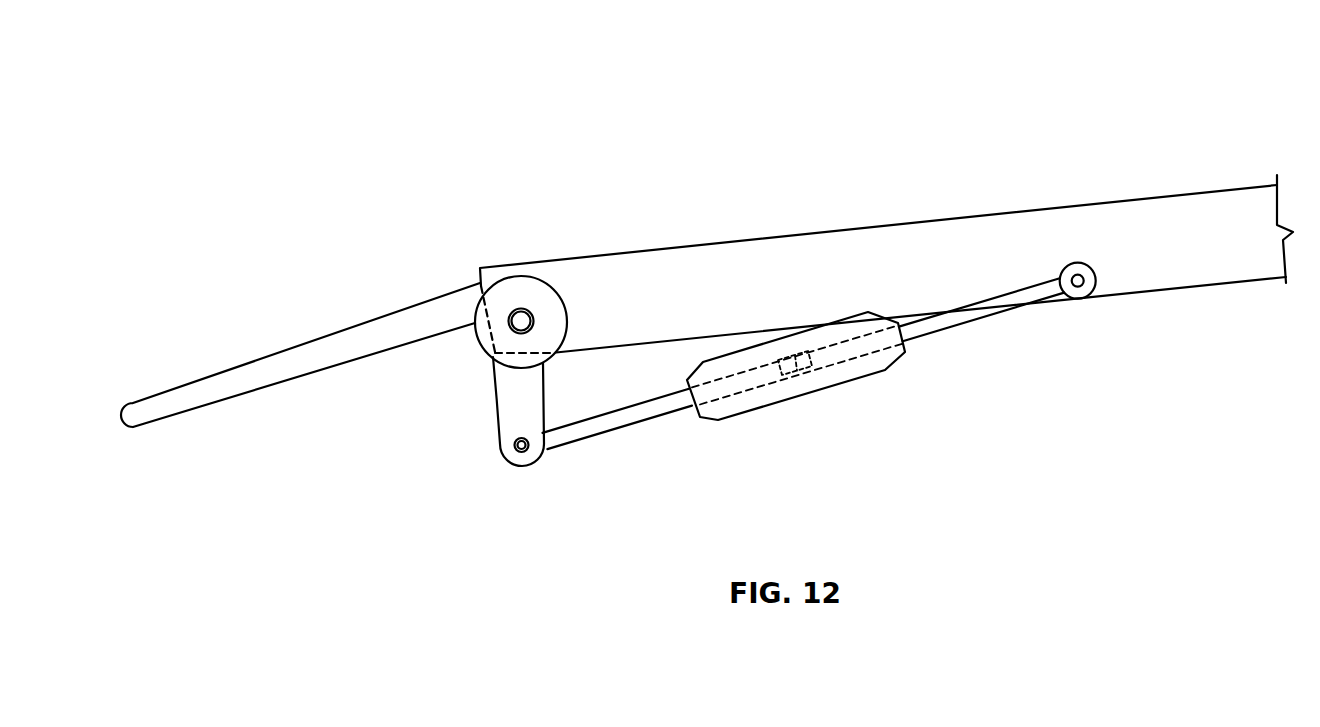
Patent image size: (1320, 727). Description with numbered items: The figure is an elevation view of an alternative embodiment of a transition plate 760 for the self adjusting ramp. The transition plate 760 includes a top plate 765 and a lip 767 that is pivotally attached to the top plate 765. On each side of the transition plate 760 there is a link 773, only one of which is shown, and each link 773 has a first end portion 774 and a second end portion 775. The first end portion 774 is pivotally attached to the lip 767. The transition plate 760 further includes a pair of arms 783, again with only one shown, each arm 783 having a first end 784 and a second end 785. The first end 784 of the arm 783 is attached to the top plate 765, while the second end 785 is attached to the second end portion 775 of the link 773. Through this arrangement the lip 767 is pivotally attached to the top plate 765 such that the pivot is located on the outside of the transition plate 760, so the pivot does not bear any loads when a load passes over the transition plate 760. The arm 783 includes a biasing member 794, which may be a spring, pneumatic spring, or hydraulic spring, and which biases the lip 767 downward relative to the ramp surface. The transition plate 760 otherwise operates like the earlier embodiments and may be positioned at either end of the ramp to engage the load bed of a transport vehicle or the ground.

The transition plate 760 is at (707, 308).
The top plate 765 is at (1070, 220).
The lip 767 is at (221, 391).
The link 773 is at (508, 405).
The first end portion 774 is at (540, 376).
The second end portion 775 is at (518, 462).
The arm 783 is at (940, 320).
The first end 784 is at (1080, 296).
The second end 785 is at (563, 443).
The biasing member 794 is at (790, 388).